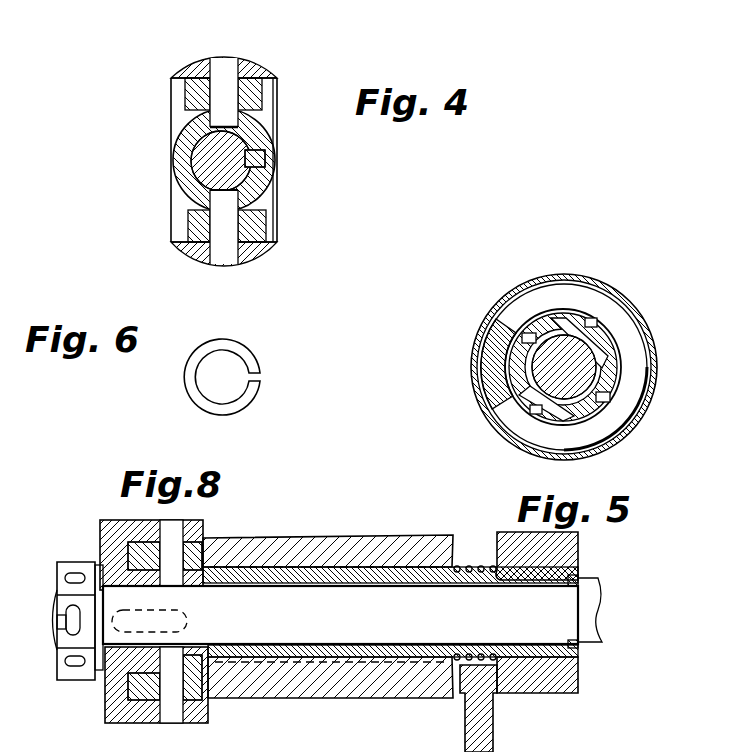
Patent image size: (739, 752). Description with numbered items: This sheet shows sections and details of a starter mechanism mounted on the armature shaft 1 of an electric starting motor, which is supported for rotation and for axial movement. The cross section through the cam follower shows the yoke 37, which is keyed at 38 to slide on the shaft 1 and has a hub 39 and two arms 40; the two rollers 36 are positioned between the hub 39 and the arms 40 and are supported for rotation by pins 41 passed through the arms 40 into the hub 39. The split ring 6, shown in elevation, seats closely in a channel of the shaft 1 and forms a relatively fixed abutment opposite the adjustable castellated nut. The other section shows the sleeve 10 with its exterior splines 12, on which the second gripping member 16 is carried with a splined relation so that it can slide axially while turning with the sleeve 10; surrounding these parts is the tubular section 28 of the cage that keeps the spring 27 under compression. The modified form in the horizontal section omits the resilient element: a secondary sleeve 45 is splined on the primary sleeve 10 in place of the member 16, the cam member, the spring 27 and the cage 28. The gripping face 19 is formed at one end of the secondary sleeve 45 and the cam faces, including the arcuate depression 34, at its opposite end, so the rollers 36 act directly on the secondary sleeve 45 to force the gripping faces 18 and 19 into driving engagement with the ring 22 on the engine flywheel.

In FIG. 4, the armature shaft 1 is at (212, 173).
In FIG. 8, the armature shaft 1 is at (590, 605).
In FIG. 6, the split ring 6 is at (215, 410).
In FIG. 5, the sleeve 10 is at (583, 400).
In FIG. 8, the sleeve 10 is at (392, 582).
In FIG. 5, the splines 12 is at (563, 318).
In FIG. 5, the gripping member 16 is at (538, 323).
In FIG. 8, the gripping face 18 is at (498, 537).
In FIG. 8, the gripping face 19 is at (456, 560).
In FIG. 8, the ring 22 is at (492, 700).
In FIG. 5, the spring 27 is at (528, 432).
In FIG. 5, the tubular section 28 is at (622, 297).
In FIG. 8, the arcuate depression 34 is at (226, 540).
In FIG. 4, the roller 36 is at (258, 97).
In FIG. 8, the roller 36 is at (130, 545).
In FIG. 4, the yoke 37 is at (172, 117).
In FIG. 8, the yoke 37 is at (100, 522).
In FIG. 4, the key 38 is at (262, 158).
In FIG. 4, the hub 39 is at (185, 143).
In FIG. 4, the arms 40 is at (253, 62).
In FIG. 4, the pins 41 is at (221, 72).
In FIG. 8, the secondary sleeve 45 is at (325, 542).